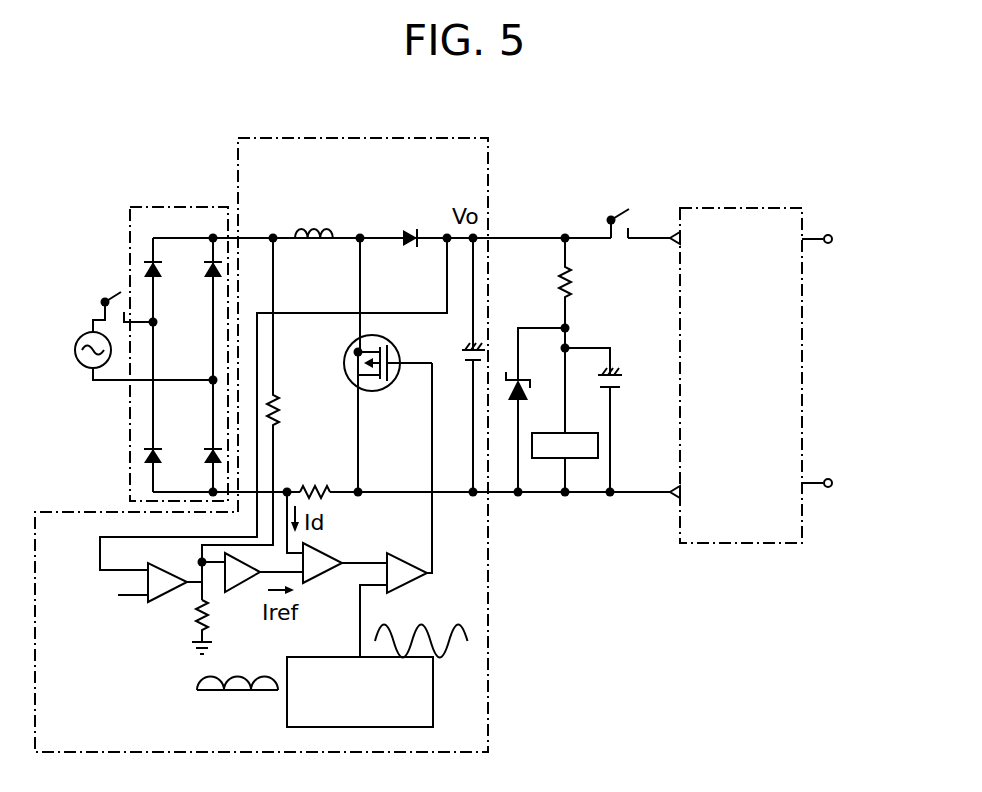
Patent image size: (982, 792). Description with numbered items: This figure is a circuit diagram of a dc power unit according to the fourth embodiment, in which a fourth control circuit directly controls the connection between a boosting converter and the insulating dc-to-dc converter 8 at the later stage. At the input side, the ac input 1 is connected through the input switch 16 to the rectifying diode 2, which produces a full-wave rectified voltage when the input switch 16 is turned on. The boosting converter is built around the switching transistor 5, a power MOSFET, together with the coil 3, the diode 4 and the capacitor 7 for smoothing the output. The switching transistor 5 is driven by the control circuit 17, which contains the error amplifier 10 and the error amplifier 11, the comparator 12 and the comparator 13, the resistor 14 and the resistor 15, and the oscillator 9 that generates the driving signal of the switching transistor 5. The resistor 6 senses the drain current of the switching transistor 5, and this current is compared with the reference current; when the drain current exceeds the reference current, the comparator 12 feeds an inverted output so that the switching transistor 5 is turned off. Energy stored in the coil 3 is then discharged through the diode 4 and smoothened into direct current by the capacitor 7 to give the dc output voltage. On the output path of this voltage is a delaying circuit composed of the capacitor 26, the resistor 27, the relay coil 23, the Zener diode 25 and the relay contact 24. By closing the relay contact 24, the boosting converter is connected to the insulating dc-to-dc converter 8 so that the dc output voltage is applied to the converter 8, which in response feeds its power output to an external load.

The ac input 1 is at (93, 370).
The rectifying diode 2 is at (182, 207).
The coil 3 is at (313, 231).
The diode 4 is at (407, 229).
The switching transistor 5 is at (348, 347).
The resistor 6 is at (302, 489).
The capacitor 7 is at (472, 362).
The insulating dc-to-dc converter 8 is at (745, 207).
The oscillator 9 is at (287, 710).
The error amplifier 10 is at (142, 602).
The error amplifier 11 is at (234, 595).
The comparator 12 is at (318, 580).
The comparator 13 is at (404, 556).
The resistor 14 is at (282, 404).
The resistor 15 is at (196, 620).
The input switch 16 is at (122, 292).
The control circuit 17 is at (489, 592).
The relay coil 23 is at (590, 422).
The relay contact 24 is at (629, 211).
The Zener diode 25 is at (519, 382).
The capacitor 26 is at (617, 374).
The resistor 27 is at (576, 294).